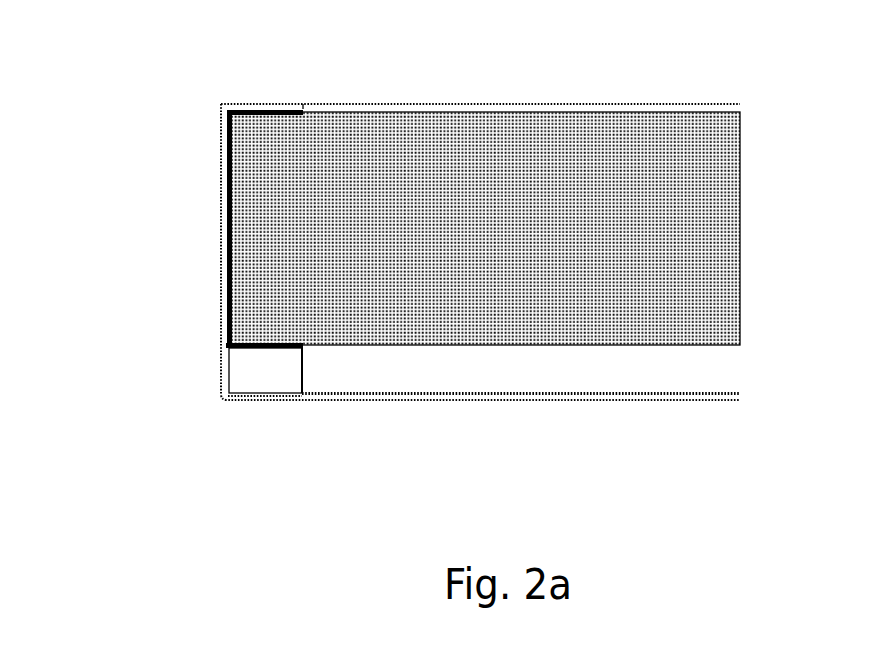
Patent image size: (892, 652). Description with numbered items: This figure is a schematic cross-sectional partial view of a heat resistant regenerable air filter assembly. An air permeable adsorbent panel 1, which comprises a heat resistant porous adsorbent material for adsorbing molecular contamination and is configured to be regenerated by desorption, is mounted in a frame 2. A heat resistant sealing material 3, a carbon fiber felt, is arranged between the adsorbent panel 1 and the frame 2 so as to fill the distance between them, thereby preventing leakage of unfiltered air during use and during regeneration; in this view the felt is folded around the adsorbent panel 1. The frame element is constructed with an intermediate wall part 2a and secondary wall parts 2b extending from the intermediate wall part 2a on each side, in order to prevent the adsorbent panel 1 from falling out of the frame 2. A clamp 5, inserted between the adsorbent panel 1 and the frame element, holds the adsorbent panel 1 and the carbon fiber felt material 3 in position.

The air permeable adsorbent panel 1 is at (660, 182).
The frame 2 is at (222, 130).
The intermediate wall part 2a is at (222, 336).
The secondary wall part 2b is at (289, 403).
The heat resistant sealing material 3 is at (228, 254).
The clamp 5 is at (246, 398).